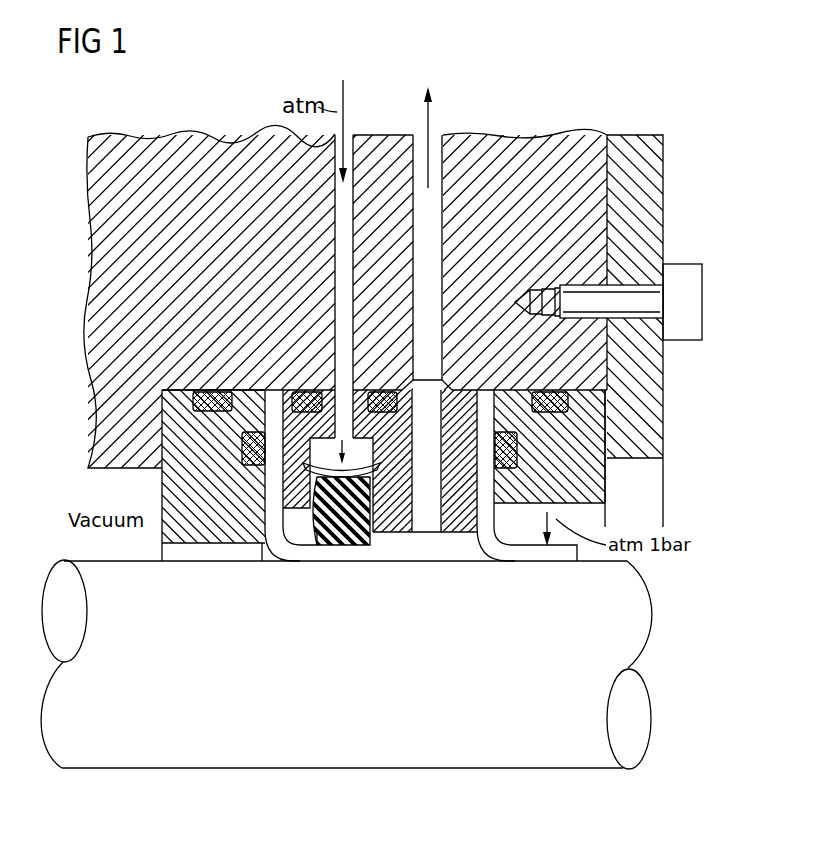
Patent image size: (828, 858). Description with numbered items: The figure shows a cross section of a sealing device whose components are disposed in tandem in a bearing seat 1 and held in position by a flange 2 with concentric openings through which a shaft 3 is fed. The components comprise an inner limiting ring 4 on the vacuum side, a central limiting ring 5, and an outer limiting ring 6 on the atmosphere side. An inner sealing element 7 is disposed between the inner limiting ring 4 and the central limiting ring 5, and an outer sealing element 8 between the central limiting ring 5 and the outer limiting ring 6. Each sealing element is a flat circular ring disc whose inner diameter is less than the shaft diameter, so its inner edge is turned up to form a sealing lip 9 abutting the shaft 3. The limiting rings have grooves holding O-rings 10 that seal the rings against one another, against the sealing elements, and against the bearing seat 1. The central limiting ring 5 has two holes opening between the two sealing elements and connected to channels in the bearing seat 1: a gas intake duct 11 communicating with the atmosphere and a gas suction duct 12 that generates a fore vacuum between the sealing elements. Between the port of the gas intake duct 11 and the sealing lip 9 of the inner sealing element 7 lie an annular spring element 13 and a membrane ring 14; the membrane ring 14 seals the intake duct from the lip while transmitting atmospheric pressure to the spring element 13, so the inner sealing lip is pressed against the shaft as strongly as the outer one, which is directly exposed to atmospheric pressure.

The bearing seat 1 is at (184, 140).
The flange 2 is at (655, 188).
The shaft 3 is at (353, 764).
The inner limiting ring 4 is at (162, 482).
The central limiting ring 5 is at (398, 532).
The outer limiting ring 6 is at (598, 477).
The inner sealing element 7 is at (275, 512).
The outer sealing element 8 is at (488, 517).
The sealing lip 9 is at (298, 553).
The O-ring 10 is at (242, 447).
The gas intake duct 11 is at (352, 140).
The gas suction duct 12 is at (438, 140).
The spring element 13 is at (345, 545).
The membrane ring 14 is at (320, 532).